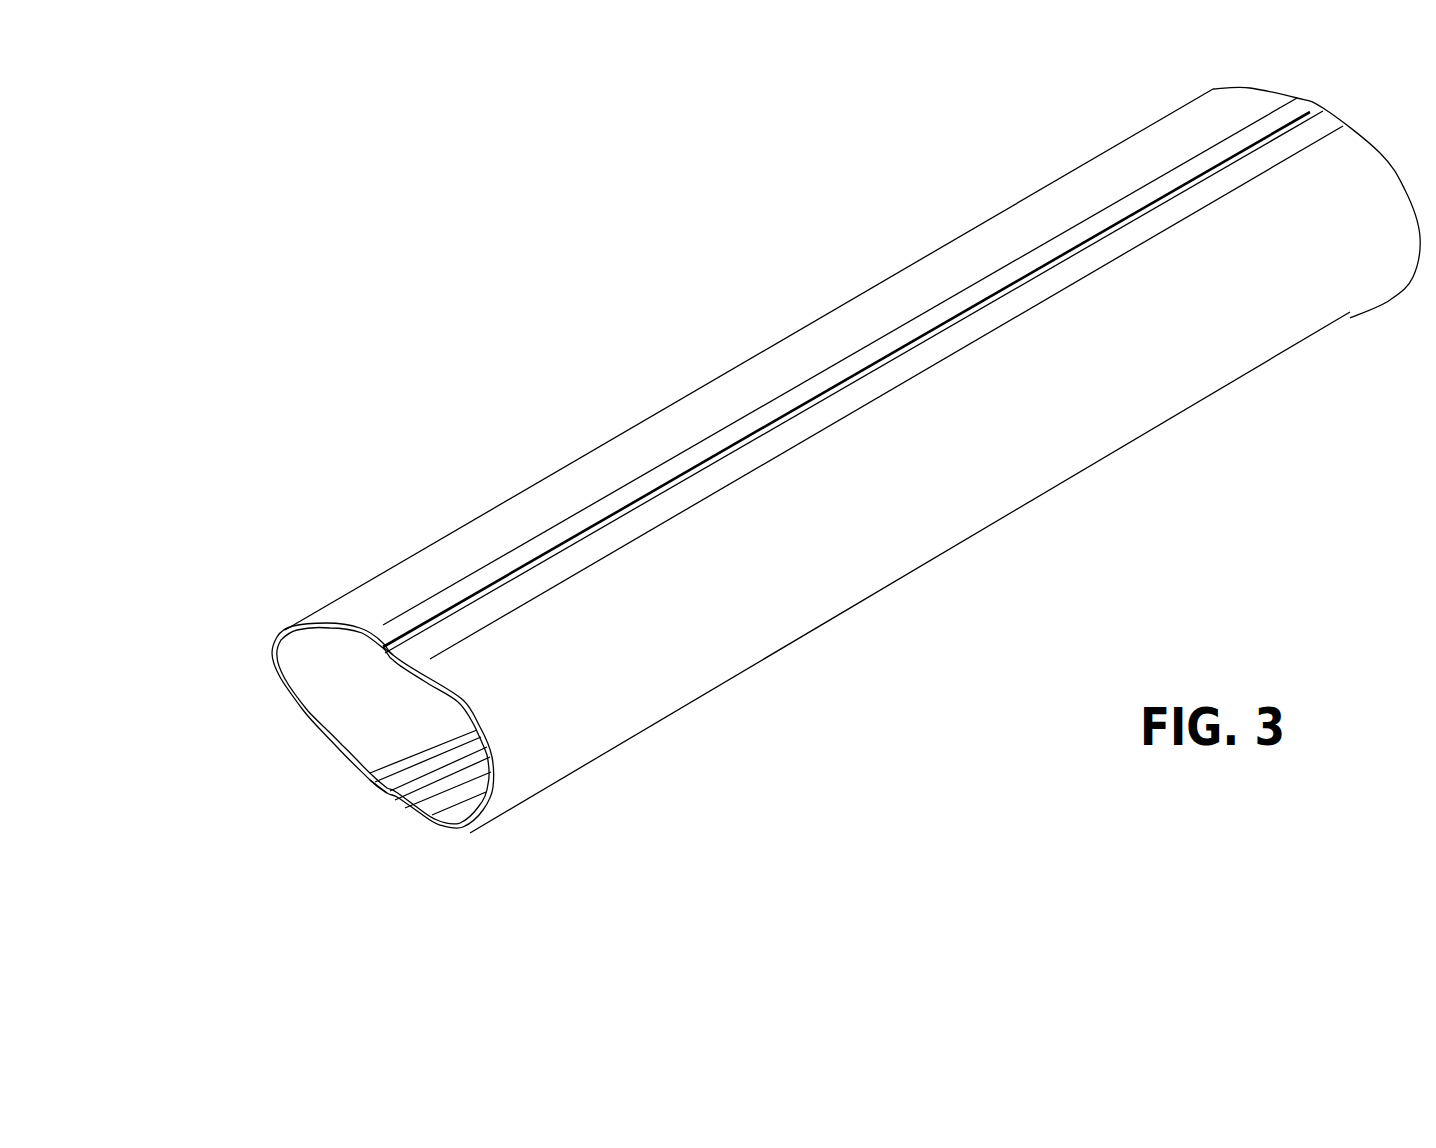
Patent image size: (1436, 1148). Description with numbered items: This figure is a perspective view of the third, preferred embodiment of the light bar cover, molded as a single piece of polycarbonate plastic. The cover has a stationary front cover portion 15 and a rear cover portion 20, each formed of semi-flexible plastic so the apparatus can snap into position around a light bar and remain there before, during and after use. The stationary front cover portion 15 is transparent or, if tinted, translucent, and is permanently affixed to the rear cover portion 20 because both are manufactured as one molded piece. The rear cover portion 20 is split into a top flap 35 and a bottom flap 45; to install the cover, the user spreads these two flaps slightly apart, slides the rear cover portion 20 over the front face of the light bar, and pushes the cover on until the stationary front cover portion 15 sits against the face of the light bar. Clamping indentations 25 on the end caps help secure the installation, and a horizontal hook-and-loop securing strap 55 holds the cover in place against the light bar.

The stationary front cover portion 15 is at (1027, 455).
The rear cover portion 20 is at (775, 332).
The clamping indentations 25 is at (382, 650).
The top flap 35 is at (565, 473).
The bottom flap 45 is at (352, 722).
The horizontal securing strap 55 is at (272, 645).